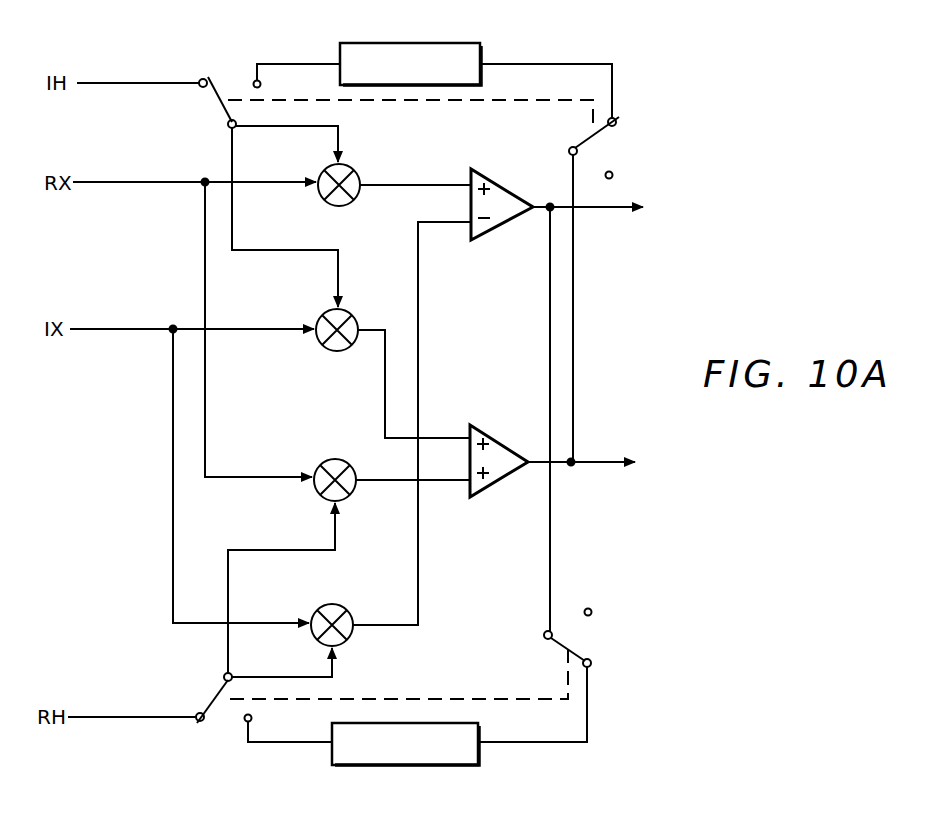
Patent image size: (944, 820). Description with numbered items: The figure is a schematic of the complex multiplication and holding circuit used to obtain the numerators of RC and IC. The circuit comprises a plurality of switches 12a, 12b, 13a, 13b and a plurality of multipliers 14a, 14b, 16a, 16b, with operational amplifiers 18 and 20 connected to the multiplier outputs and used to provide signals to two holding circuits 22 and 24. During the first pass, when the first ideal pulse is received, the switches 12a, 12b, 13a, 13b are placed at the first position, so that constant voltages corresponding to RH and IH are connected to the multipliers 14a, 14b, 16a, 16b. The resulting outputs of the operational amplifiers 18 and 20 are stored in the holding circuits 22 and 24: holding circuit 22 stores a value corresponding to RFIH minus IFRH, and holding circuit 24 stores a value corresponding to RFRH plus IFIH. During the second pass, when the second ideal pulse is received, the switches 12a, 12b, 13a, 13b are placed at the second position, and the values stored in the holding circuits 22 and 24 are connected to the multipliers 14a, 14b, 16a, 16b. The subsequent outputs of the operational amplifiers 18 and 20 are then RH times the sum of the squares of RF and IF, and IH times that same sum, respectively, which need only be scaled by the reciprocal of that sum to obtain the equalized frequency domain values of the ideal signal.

The switch 12a is at (220, 112).
The switch 12b is at (598, 133).
The switch 13a is at (220, 690).
The switch 13b is at (560, 644).
The multiplier 14a is at (352, 170).
The multiplier 14b is at (326, 606).
The multiplier 16a is at (376, 302).
The multiplier 16b is at (328, 460).
The operational amplifier 18 is at (500, 187).
The operational amplifier 20 is at (496, 442).
The holding circuit 22 is at (469, 755).
The holding circuit 24 is at (403, 43).